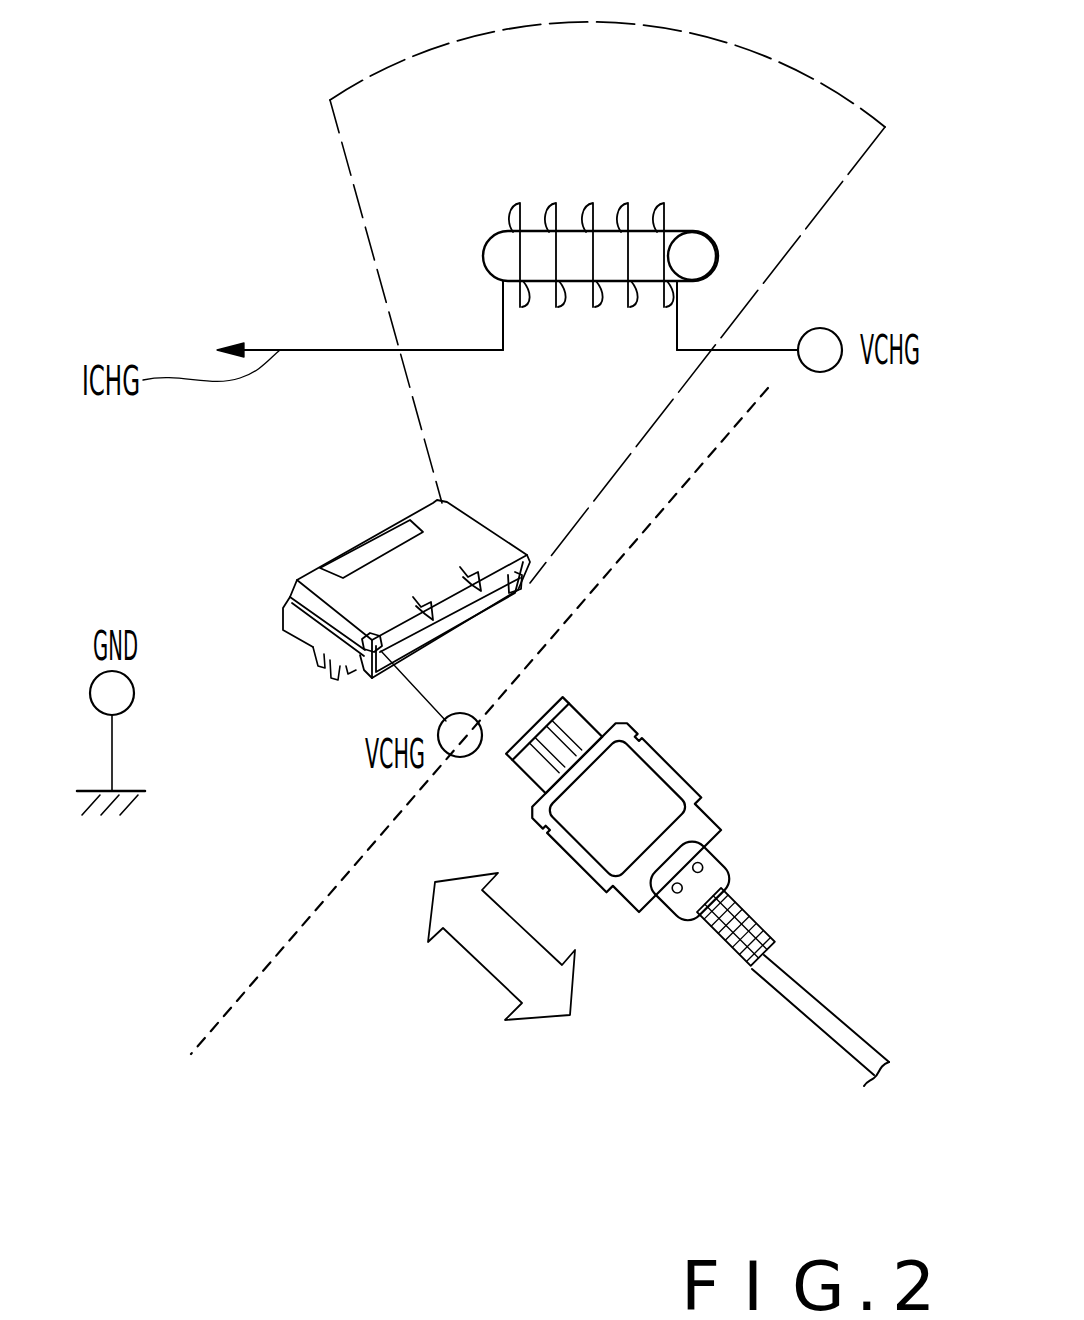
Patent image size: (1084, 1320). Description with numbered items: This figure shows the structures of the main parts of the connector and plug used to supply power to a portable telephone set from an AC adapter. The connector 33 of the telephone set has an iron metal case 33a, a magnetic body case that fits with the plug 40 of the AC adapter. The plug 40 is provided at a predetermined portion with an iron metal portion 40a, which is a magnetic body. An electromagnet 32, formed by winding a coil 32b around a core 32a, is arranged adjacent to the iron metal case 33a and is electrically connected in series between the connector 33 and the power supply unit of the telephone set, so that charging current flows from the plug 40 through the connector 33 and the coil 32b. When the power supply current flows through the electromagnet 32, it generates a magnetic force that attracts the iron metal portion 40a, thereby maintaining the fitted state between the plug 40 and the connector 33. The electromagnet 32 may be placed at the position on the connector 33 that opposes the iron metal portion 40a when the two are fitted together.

The electromagnet 32 is at (574, 181).
The core 32a is at (494, 236).
The coil 32b is at (598, 203).
The connector 33 is at (370, 566).
The iron metal case 33a is at (312, 660).
The plug 40 is at (688, 852).
The iron metal portion 40a is at (530, 760).